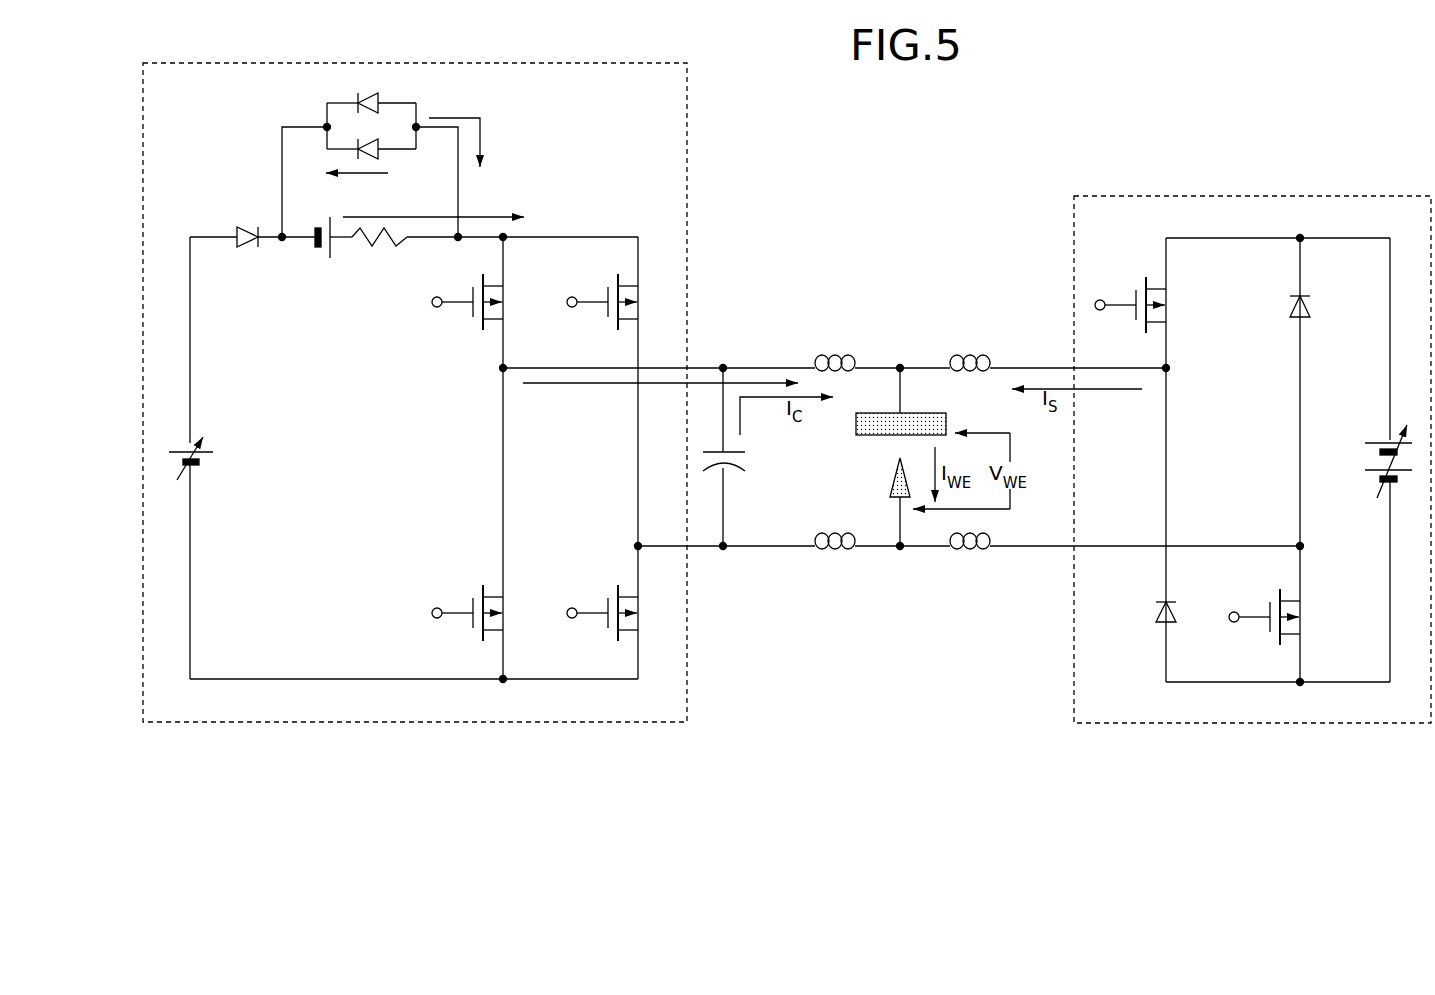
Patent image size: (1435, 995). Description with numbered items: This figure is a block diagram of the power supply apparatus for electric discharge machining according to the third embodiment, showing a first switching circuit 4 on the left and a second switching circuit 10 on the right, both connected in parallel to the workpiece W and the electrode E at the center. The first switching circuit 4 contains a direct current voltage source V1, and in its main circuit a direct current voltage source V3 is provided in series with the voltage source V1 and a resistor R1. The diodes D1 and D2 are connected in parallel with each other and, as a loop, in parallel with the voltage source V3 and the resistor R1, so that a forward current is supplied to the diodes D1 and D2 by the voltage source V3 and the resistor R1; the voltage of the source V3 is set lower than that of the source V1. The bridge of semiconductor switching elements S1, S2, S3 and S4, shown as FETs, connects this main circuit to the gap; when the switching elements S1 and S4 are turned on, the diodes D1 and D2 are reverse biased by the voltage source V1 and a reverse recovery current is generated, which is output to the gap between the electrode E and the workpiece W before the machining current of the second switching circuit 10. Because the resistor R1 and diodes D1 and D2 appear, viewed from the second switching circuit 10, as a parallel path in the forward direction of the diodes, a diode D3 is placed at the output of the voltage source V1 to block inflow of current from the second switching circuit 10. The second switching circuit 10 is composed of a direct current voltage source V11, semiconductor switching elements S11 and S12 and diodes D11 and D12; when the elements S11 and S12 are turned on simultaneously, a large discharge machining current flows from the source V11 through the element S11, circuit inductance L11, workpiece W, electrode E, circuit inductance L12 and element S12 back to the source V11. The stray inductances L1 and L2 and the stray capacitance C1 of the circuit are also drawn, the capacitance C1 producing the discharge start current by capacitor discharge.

The first switching circuit 4 is at (687, 262).
The second switching circuit 10 is at (1074, 240).
The diode D1 is at (358, 99).
The diode D2 is at (385, 156).
The diode D3 is at (252, 231).
The direct current voltage source V3 is at (330, 258).
The resistor R1 is at (378, 247).
The direct current voltage source V1 is at (207, 450).
The semiconductor switching element S1 is at (505, 300).
The semiconductor switching element S2 is at (505, 611).
The semiconductor switching element S3 is at (640, 300).
The semiconductor switching element S4 is at (640, 611).
The stray capacitance C1 is at (745, 458).
The stray inductance L1 is at (840, 355).
The stray inductance L2 is at (835, 556).
The circuit inductance L11 is at (973, 355).
The circuit inductance L12 is at (969, 556).
The workpiece W is at (947, 421).
The electrode E is at (893, 485).
The semiconductor switching element S11 is at (1168, 303).
The semiconductor switching element S12 is at (1302, 615).
The diode D11 is at (1312, 298).
The diode D12 is at (1178, 605).
The direct current voltage source V11 is at (1372, 460).